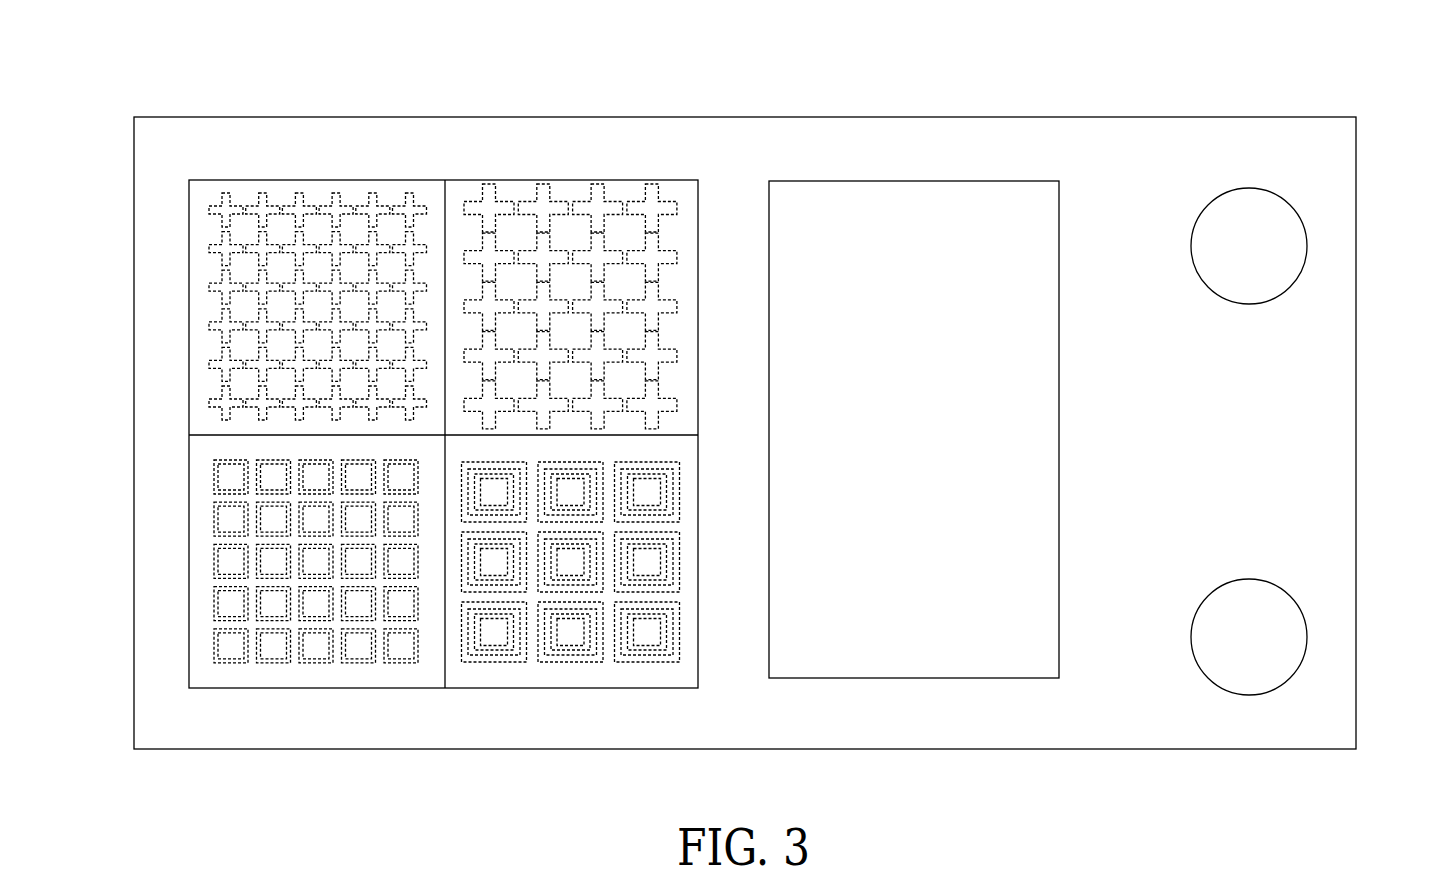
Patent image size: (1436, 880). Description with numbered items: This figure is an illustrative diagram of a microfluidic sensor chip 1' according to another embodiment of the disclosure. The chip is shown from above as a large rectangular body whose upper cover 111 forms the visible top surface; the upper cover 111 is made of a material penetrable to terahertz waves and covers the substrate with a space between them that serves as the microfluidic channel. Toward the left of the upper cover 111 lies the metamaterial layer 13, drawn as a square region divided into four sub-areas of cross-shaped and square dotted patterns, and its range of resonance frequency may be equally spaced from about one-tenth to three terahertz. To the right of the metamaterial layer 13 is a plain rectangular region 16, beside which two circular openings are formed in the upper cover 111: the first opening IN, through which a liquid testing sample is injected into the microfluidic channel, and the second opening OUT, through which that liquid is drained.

The microfluidic sensor chip 1' is at (751, 418).
The metamaterial layer 13 is at (186, 177).
The upper cover 111 is at (1134, 172).
The circuit region 16 is at (1006, 678).
The first opening IN is at (1290, 222).
The second opening OUT is at (1290, 660).